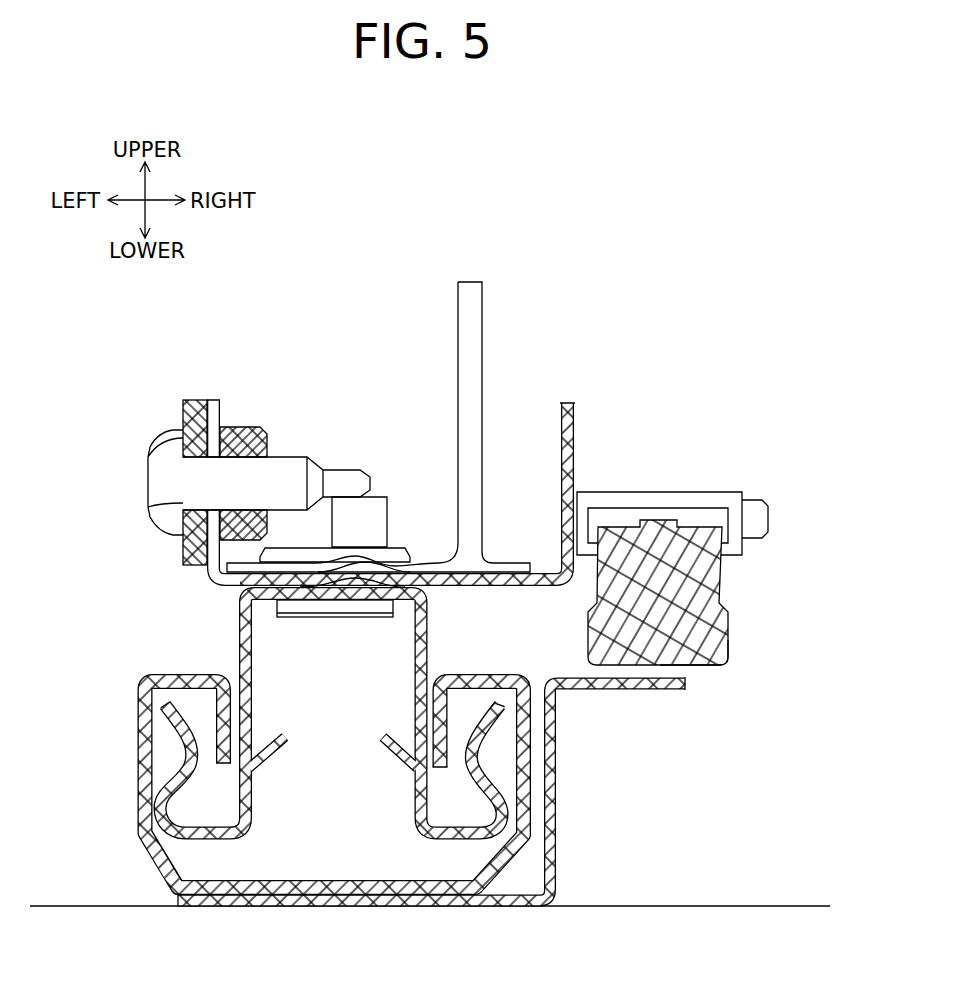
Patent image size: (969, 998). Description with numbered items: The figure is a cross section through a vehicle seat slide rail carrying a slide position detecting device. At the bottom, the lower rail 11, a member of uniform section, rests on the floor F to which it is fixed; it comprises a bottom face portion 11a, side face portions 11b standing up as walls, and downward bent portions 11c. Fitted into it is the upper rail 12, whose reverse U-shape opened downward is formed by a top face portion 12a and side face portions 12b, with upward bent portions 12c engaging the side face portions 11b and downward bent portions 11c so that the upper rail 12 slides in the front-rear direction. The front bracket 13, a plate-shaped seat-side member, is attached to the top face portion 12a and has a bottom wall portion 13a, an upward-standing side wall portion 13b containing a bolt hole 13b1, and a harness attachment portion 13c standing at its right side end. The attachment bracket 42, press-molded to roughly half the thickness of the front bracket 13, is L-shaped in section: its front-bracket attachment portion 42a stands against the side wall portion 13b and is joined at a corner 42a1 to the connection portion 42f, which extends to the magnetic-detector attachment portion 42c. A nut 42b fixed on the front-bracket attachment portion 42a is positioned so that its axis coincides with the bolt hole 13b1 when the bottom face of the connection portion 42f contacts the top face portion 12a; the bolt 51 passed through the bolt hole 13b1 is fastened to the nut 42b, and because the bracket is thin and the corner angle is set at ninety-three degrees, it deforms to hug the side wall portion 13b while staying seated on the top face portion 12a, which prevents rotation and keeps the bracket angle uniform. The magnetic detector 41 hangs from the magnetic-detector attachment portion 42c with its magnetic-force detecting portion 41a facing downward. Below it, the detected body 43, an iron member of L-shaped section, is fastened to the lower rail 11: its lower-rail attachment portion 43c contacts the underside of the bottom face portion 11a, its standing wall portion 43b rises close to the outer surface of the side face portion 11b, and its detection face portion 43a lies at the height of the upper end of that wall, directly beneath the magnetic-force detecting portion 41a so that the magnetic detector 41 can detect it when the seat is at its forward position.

The lower rail 11 is at (284, 812).
The bottom face portion 11a is at (252, 905).
The side face portion 11b is at (136, 775).
The downward bent portion 11c is at (224, 683).
The upper rail 12 is at (326, 780).
The top face portion 12a is at (361, 587).
The side face portion 12b is at (238, 620).
The upward bent portion 12c is at (190, 848).
The front bracket 13 is at (323, 427).
The bottom wall portion 13a is at (424, 562).
The side wall portion 13b is at (182, 412).
The bolt hole 13b1 is at (163, 512).
The harness attachment portion 13c is at (484, 312).
The magnetic detector 41 is at (692, 602).
The magnetic-force detecting portion 41a is at (703, 668).
The attachment bracket 42 is at (377, 472).
The front-bracket attachment portion 42a is at (222, 417).
The corner 42a1 is at (205, 578).
The nut 42b is at (248, 427).
The magnetic-detector attachment portion 42c is at (577, 438).
The connection portion 42f is at (516, 576).
The detected body 43 is at (449, 829).
The detection face portion 43a is at (633, 690).
The standing wall portion 43b is at (558, 770).
The lower-rail attachment portion 43c is at (410, 905).
The bolt 51 is at (148, 481).
The floor F is at (737, 905).